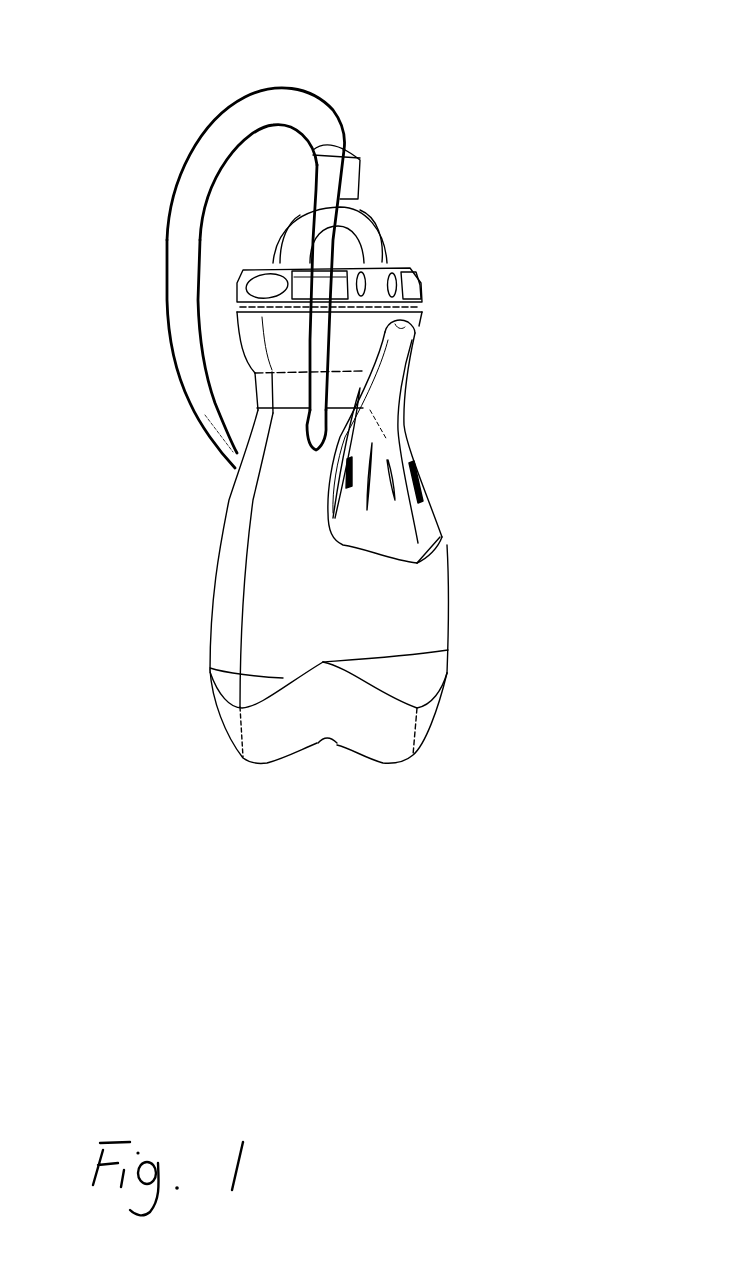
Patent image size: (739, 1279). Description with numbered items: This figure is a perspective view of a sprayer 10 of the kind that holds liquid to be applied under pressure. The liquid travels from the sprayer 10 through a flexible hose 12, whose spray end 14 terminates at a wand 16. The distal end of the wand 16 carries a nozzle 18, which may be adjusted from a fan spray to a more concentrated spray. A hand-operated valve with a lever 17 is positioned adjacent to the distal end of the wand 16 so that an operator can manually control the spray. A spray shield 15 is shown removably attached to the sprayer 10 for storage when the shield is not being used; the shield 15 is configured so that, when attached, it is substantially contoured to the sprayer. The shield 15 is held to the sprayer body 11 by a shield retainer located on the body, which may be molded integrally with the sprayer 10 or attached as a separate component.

The sprayer 10 is at (575, 68).
The sprayer body 11 is at (221, 511).
The flexible hose 12 is at (165, 243).
The spray end 14 is at (418, 13).
The spray shield 15 is at (420, 463).
The wand 16 is at (355, 242).
The lever 17 is at (340, 238).
The nozzle 18 is at (310, 445).